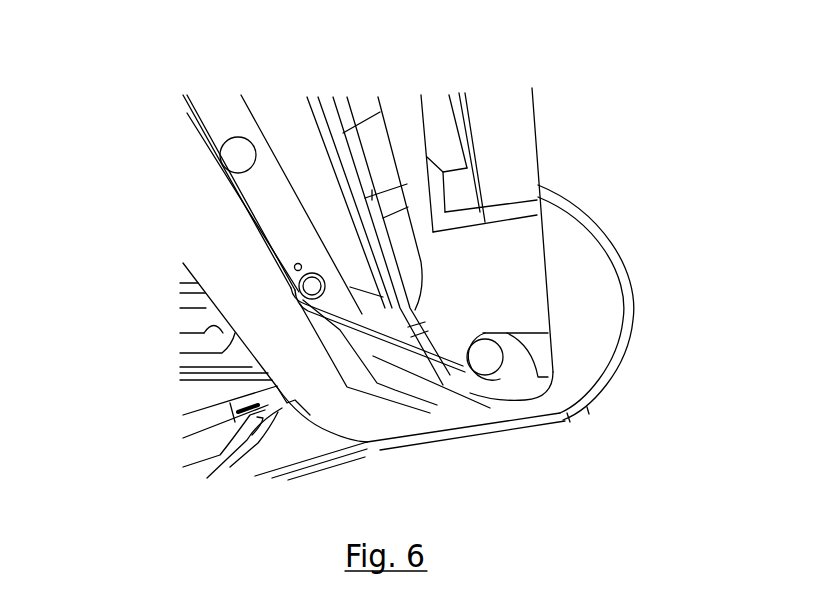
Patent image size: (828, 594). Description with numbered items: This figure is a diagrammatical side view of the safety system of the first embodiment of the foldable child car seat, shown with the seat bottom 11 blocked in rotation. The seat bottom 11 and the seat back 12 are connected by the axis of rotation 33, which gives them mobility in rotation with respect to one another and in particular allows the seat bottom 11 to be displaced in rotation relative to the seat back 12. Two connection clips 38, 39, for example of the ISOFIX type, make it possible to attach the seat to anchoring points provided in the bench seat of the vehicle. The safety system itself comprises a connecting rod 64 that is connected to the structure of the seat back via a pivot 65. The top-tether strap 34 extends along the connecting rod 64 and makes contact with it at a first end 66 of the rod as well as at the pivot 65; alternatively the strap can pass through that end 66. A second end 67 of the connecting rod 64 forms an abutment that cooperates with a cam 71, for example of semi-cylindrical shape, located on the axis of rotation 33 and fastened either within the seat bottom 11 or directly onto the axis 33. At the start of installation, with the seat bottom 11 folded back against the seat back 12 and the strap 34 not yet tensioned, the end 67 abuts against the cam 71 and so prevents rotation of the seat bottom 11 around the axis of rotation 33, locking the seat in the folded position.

The seat bottom 11 is at (528, 138).
The seat back 12 is at (188, 182).
The axis of rotation 33 is at (492, 368).
The top-tether strap 34 is at (410, 330).
The connection clip 38 is at (188, 449).
The connection clip 39 is at (182, 324).
The connecting rod 64 is at (283, 238).
The pivot 65 is at (305, 287).
The first end of the connecting rod 66 is at (251, 138).
The second end of the connecting rod 67 is at (458, 395).
The cam 71 is at (518, 356).